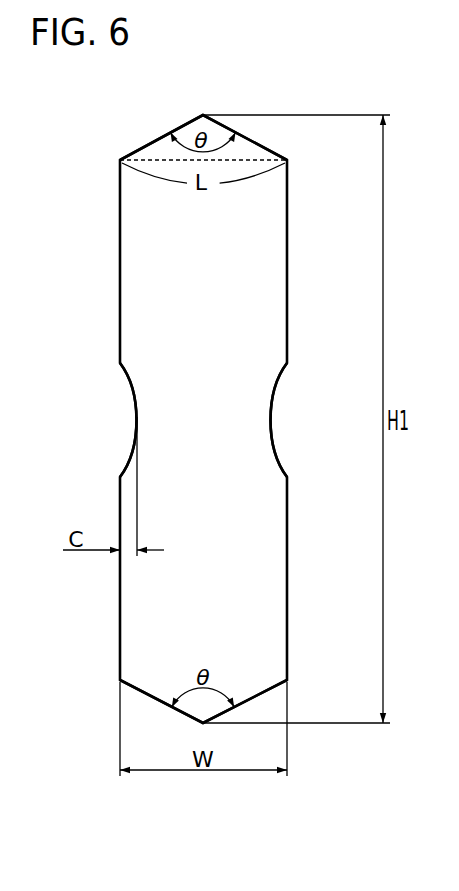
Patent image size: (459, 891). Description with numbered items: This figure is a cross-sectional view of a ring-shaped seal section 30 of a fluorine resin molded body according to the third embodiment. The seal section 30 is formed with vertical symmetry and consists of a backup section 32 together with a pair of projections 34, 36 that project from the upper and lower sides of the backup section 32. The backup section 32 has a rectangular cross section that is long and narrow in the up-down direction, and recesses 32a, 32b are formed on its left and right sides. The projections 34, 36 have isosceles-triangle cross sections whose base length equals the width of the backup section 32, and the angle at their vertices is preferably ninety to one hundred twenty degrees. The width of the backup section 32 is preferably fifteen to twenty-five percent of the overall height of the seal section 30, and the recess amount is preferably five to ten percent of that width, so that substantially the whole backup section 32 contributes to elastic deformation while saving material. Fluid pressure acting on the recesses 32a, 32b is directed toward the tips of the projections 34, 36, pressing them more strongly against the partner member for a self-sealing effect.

The seal section 30 is at (325, 70).
The backup section 32 is at (268, 287).
The recess 32a is at (131, 391).
The recess 32b is at (275, 392).
The projection 34 is at (160, 147).
The projection 36 is at (155, 690).